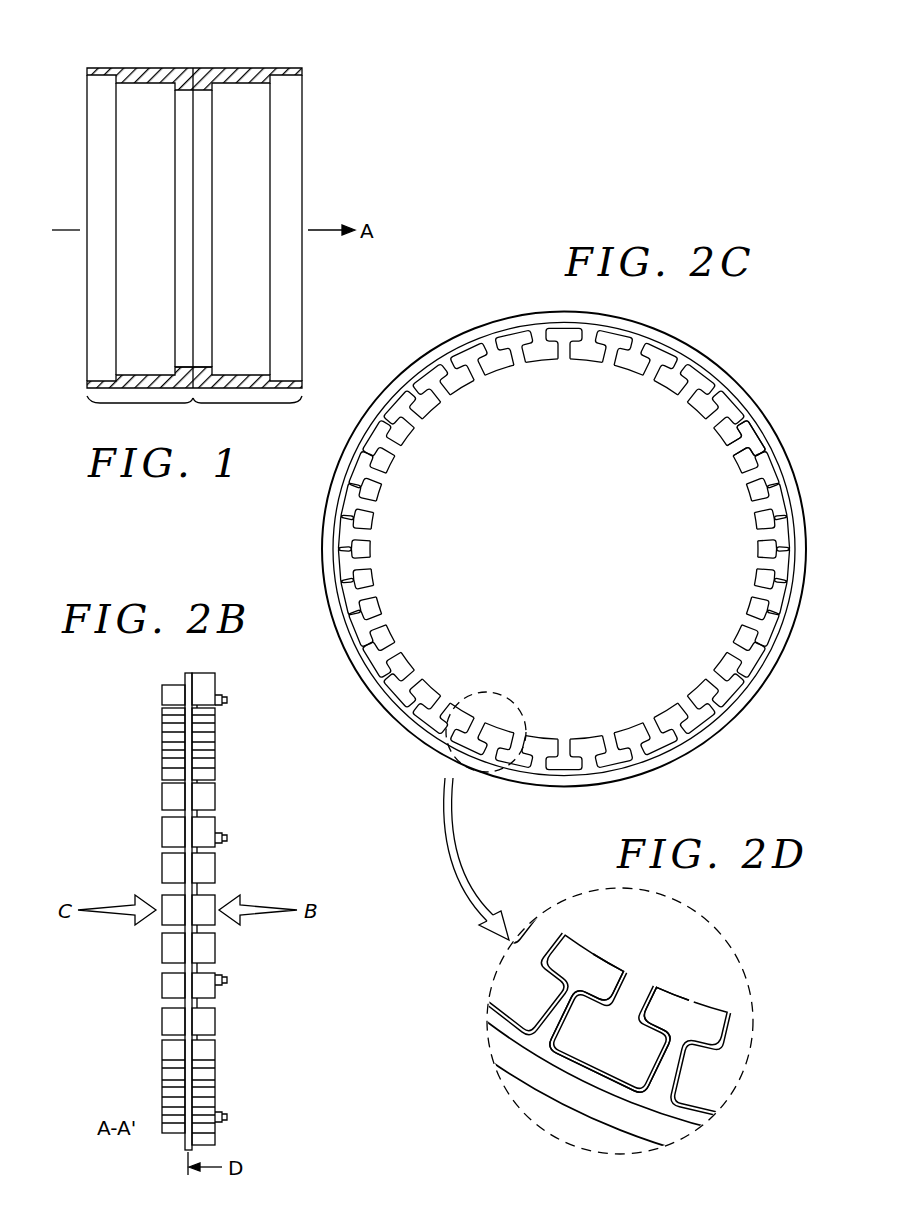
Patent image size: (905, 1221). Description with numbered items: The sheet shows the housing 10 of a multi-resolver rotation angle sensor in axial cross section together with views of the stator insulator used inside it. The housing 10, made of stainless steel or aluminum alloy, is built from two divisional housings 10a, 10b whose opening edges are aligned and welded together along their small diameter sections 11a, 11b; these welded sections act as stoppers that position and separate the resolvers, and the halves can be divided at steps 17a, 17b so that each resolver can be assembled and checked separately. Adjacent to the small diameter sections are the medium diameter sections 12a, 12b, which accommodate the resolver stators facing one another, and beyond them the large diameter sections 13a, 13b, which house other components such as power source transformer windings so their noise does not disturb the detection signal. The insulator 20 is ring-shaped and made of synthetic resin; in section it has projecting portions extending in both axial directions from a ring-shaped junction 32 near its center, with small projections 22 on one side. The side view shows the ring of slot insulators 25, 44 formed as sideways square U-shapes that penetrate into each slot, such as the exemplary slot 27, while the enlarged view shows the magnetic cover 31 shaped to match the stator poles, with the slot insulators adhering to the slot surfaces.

In FIG. 1, the housing 10 is at (228, 232).
In FIG. 1, the divisional housing 10a is at (140, 413).
In FIG. 1, the divisional housing 10b is at (247, 413).
In FIG. 1, the small diameter section 11a is at (183, 72).
In FIG. 1, the small diameter section 11b is at (213, 72).
In FIG. 1, the medium diameter section 12a is at (148, 70).
In FIG. 1, the medium diameter section 12b is at (250, 72).
In FIG. 1, the large diameter section 13a is at (100, 68).
In FIG. 1, the large diameter section 13b is at (290, 68).
In FIG. 1, the step 17a is at (187, 366).
In FIG. 1, the step 17b is at (204, 366).
In FIG. 2C, the insulator 20 is at (564, 540).
In FIG. 2B, the insulator 20 is at (168, 896).
In FIG. 2B, the locating lug 22 is at (228, 700).
In FIG. 2C, the slot insulator 25 is at (563, 548).
In FIG. 2B, the slot insulator 25 is at (146, 909).
In FIG. 2D, the slot insulator 25 is at (622, 1024).
In FIG. 2C, the slot insulator 44 is at (712, 420).
In FIG. 2B, the slot insulator 44 is at (168, 746).
In FIG. 2D, the slot insulator 44 is at (565, 1045).
In FIG. 2C, the slot 27 is at (742, 450).
In FIG. 2D, the slot 27 is at (632, 998).
In FIG. 2D, the magnetic cover 31 is at (560, 1008).
In FIG. 2B, the ring-shaped junction 32 is at (186, 674).